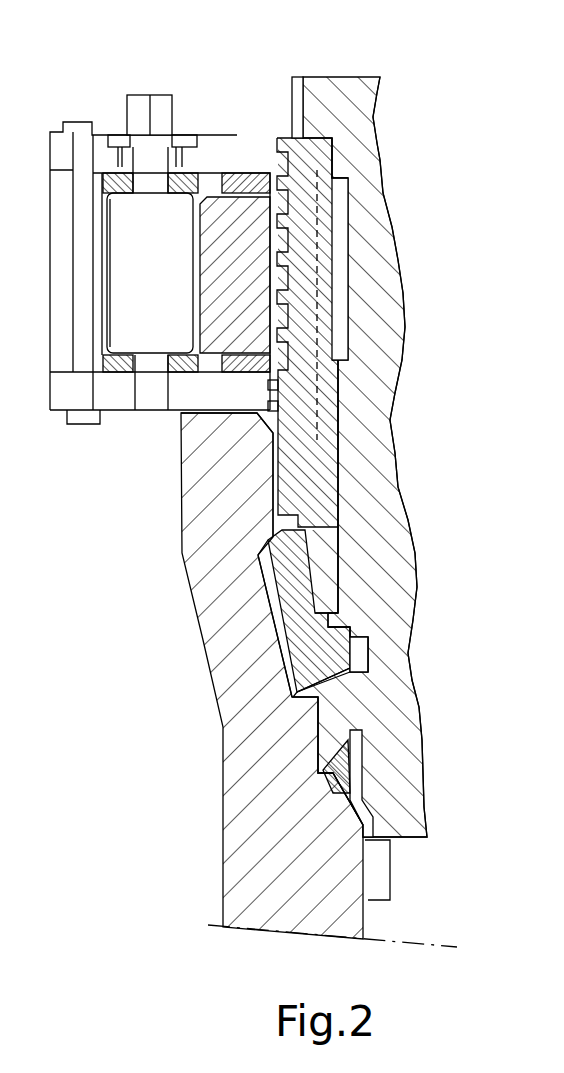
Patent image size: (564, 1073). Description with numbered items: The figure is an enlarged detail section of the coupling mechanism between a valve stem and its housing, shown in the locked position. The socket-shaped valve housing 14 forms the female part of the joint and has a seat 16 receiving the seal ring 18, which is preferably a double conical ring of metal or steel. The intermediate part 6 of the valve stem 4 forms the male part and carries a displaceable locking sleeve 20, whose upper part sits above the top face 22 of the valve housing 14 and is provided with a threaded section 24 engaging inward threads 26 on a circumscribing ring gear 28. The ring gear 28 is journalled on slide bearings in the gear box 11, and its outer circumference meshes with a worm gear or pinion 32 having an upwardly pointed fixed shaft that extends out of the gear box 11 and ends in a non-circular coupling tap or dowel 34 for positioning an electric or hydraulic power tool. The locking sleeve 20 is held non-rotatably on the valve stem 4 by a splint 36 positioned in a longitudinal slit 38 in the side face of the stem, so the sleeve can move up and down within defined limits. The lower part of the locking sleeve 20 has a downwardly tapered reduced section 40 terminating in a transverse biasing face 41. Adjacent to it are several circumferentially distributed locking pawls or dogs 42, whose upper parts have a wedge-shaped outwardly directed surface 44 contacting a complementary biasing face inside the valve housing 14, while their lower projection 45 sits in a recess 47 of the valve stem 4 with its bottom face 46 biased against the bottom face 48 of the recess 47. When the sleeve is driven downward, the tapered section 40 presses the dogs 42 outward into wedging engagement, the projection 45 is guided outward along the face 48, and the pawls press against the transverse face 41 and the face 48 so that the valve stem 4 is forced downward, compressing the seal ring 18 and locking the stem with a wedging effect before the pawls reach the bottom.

The valve stem 4 is at (363, 447).
The intermediate part of the valve stem 6 is at (360, 612).
The gear box 11 is at (50, 193).
The valve housing 14 is at (242, 792).
The seat 16 is at (237, 850).
The seal ring 18 is at (333, 773).
The locking sleeve 20 is at (336, 332).
The top face 22 is at (181, 455).
The threaded section 24 is at (332, 230).
The inward threads 26 is at (332, 198).
The ring gear 28 is at (305, 137).
The worm gear or pinion 32 is at (125, 205).
The coupling tap or dowel 34 is at (154, 110).
The splint 36 is at (332, 278).
The longitudinal slit 38 is at (338, 400).
The reduced section 40 is at (370, 592).
The transverse biasing face 41 is at (350, 530).
The locking pawls or dogs 42 is at (262, 550).
The wedge-shaped outwardly directed surface 44 is at (268, 531).
The projection 45 is at (352, 683).
The bottom face of the projection 46 is at (257, 727).
The recess 47 is at (363, 645).
The bottom face of the recess 48 is at (284, 101).